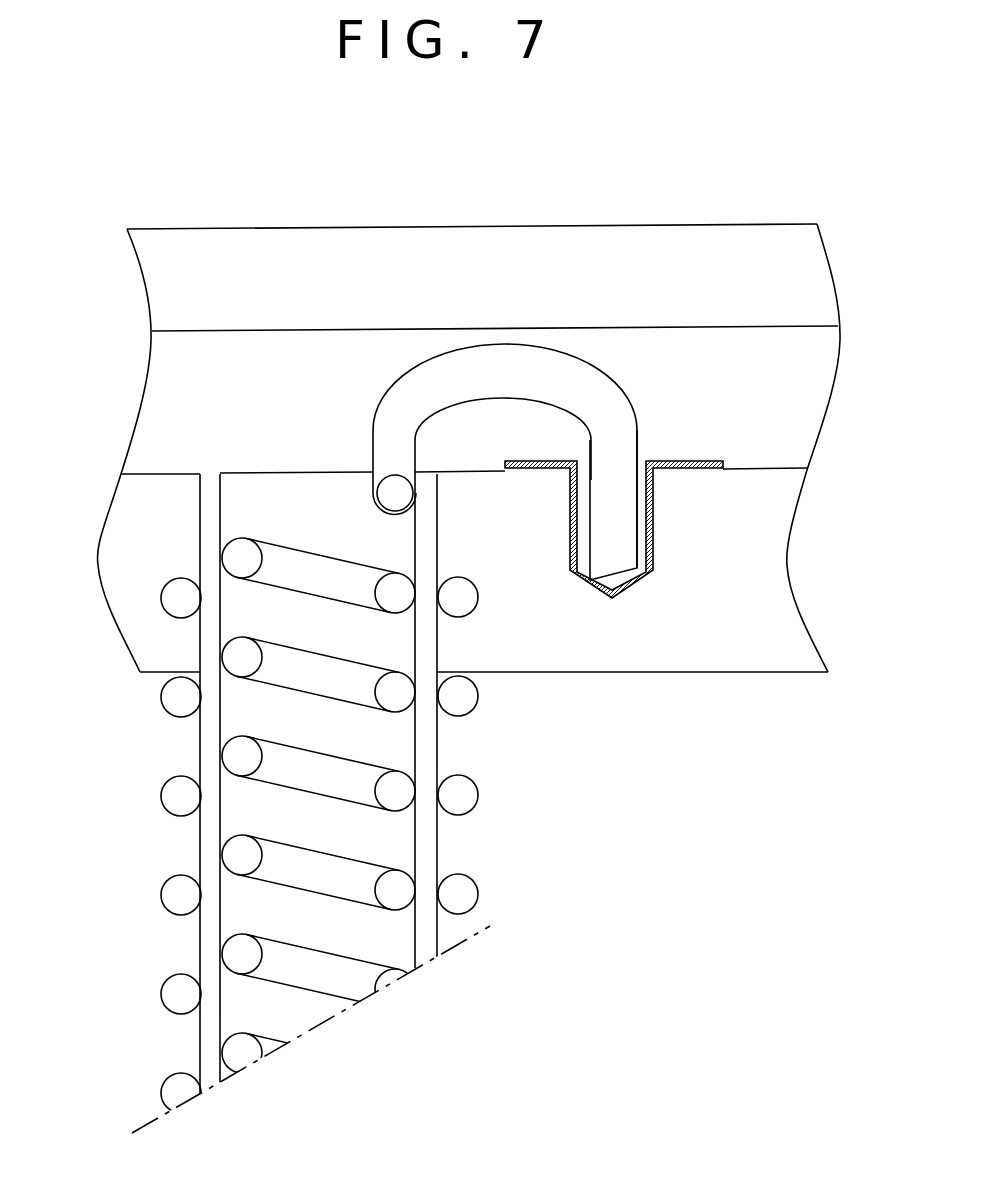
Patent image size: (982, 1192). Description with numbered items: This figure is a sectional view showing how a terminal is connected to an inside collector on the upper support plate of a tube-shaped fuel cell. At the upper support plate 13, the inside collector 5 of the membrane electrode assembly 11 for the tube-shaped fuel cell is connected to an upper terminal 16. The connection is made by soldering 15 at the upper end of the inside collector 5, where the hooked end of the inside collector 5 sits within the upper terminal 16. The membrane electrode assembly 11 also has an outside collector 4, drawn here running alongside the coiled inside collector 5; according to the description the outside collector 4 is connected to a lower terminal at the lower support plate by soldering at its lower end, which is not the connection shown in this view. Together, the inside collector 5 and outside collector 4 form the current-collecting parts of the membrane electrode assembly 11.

The outside collector 4 is at (465, 895).
The inside collector 5 is at (526, 643).
The membrane electrode assembly 11 is at (150, 847).
The upper support plate 13 is at (770, 597).
The soldering 15 is at (643, 458).
The upper terminal 16 is at (694, 461).